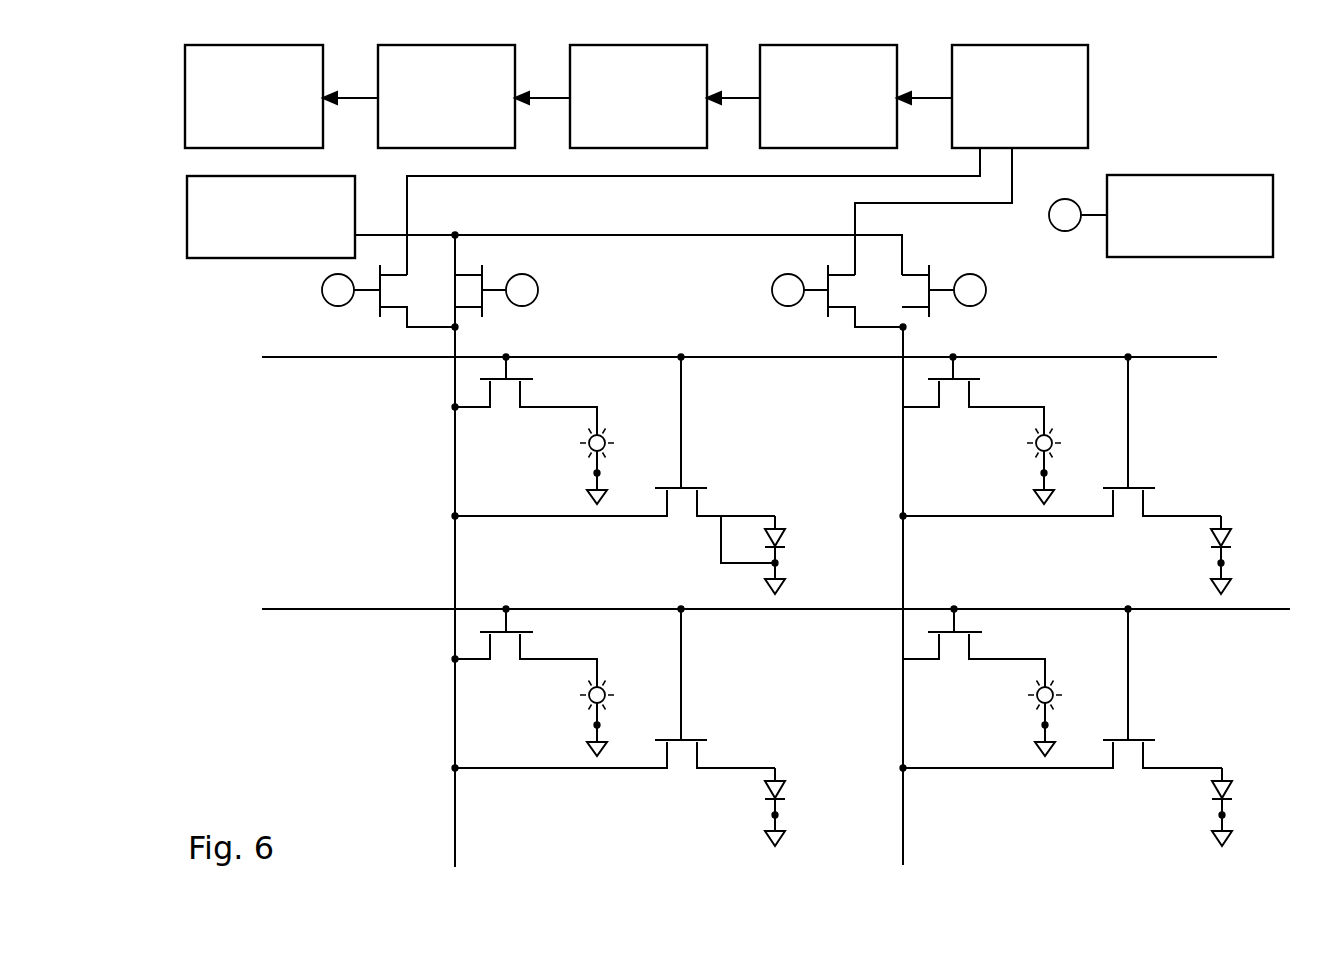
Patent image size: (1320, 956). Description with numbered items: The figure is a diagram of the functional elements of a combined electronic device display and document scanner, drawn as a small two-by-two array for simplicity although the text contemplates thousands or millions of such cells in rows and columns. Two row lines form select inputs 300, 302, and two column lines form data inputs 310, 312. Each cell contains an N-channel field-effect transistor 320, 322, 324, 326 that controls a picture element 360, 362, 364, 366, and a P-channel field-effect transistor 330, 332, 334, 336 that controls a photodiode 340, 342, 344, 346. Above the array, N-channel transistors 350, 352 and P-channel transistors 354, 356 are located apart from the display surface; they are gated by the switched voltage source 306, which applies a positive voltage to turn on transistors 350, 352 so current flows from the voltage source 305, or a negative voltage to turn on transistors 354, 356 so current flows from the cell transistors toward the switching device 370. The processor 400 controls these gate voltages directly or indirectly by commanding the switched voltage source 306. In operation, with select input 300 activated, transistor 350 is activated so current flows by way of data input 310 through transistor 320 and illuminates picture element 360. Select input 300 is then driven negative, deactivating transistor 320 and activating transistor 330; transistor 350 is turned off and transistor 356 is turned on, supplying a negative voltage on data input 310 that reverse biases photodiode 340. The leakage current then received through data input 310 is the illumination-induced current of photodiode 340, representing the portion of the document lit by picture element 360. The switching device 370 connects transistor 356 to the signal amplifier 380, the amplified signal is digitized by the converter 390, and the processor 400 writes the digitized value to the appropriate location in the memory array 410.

The select input 300 is at (300, 361).
The select input 302 is at (300, 613).
The voltage source 305 is at (303, 242).
The switched voltage source 306 is at (1221, 241).
The data input 310 is at (455, 793).
The data input 312 is at (903, 852).
The N-channel field-effect transistor 320 is at (533, 380).
The N-channel field-effect transistor 322 is at (980, 380).
The N-channel field-effect transistor 324 is at (533, 633).
The N-channel field-effect transistor 326 is at (980, 633).
The P-channel field-effect transistor 330 is at (703, 488).
The P-channel field-effect transistor 332 is at (1151, 488).
The P-channel field-effect transistor 334 is at (703, 740).
The P-channel field-effect transistor 336 is at (1151, 740).
The photodiode 340 is at (786, 528).
The photodiode 342 is at (1233, 528).
The photodiode 344 is at (786, 780).
The photodiode 346 is at (1234, 780).
The N-channel field-effect transistor 350 is at (482, 316).
The N-channel field-effect transistor 352 is at (929, 316).
The P-channel field-effect transistor 354 is at (828, 316).
The P-channel field-effect transistor 356 is at (380, 316).
The picture element 360 is at (590, 450).
The picture element 362 is at (1037, 450).
The picture element 364 is at (590, 702).
The picture element 366 is at (1037, 702).
The switching device 370 is at (1035, 133).
The signal amplifier 380 is at (845, 133).
The converter 390 is at (655, 133).
The processor 400 is at (463, 133).
The memory array 410 is at (268, 133).